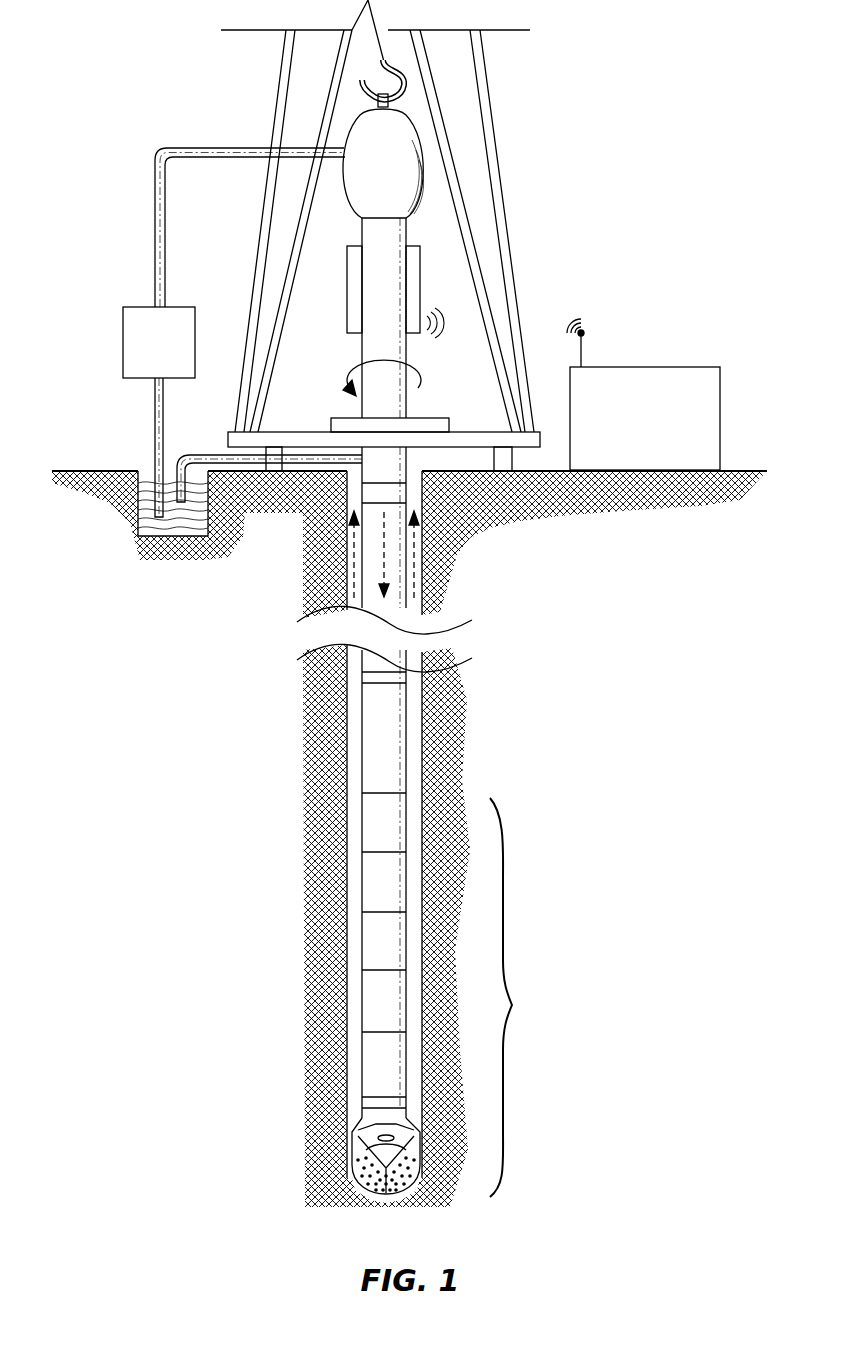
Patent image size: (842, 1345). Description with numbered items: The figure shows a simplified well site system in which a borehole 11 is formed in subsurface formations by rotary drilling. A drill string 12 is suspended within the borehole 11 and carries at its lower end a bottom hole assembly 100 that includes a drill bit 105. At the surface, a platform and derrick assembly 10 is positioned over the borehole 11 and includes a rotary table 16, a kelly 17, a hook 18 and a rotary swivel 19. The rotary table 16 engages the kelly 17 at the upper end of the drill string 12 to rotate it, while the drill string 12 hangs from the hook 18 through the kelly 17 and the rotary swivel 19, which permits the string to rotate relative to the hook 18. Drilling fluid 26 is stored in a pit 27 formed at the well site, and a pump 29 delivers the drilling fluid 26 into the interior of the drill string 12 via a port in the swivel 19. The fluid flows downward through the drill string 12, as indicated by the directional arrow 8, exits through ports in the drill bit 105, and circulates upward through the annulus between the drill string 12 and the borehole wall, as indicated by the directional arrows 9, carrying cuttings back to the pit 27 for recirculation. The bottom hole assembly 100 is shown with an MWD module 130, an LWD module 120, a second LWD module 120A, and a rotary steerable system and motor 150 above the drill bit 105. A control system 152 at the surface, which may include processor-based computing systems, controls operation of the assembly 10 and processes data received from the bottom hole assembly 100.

The platform and derrick assembly 10 is at (514, 122).
The hook 18 is at (380, 62).
The rotary swivel 19 is at (358, 195).
The kelly 17 is at (368, 410).
The rotary table 16 is at (430, 427).
The drill string 12 is at (384, 476).
The borehole 11 is at (416, 478).
The directional arrows 9 is at (353, 542).
The directional arrow 8 is at (383, 560).
The pump 29 is at (142, 378).
The pit 27 is at (147, 474).
The drilling fluid 26 is at (172, 528).
The control system 152 is at (645, 367).
The bottom hole assembly 100 is at (529, 997).
The LWD module 120 is at (368, 880).
The MWD module 130 is at (368, 940).
The second LWD module 120A is at (368, 1000).
The rotary steerable system and motor 150 is at (370, 1060).
The drill bit 105 is at (357, 1147).